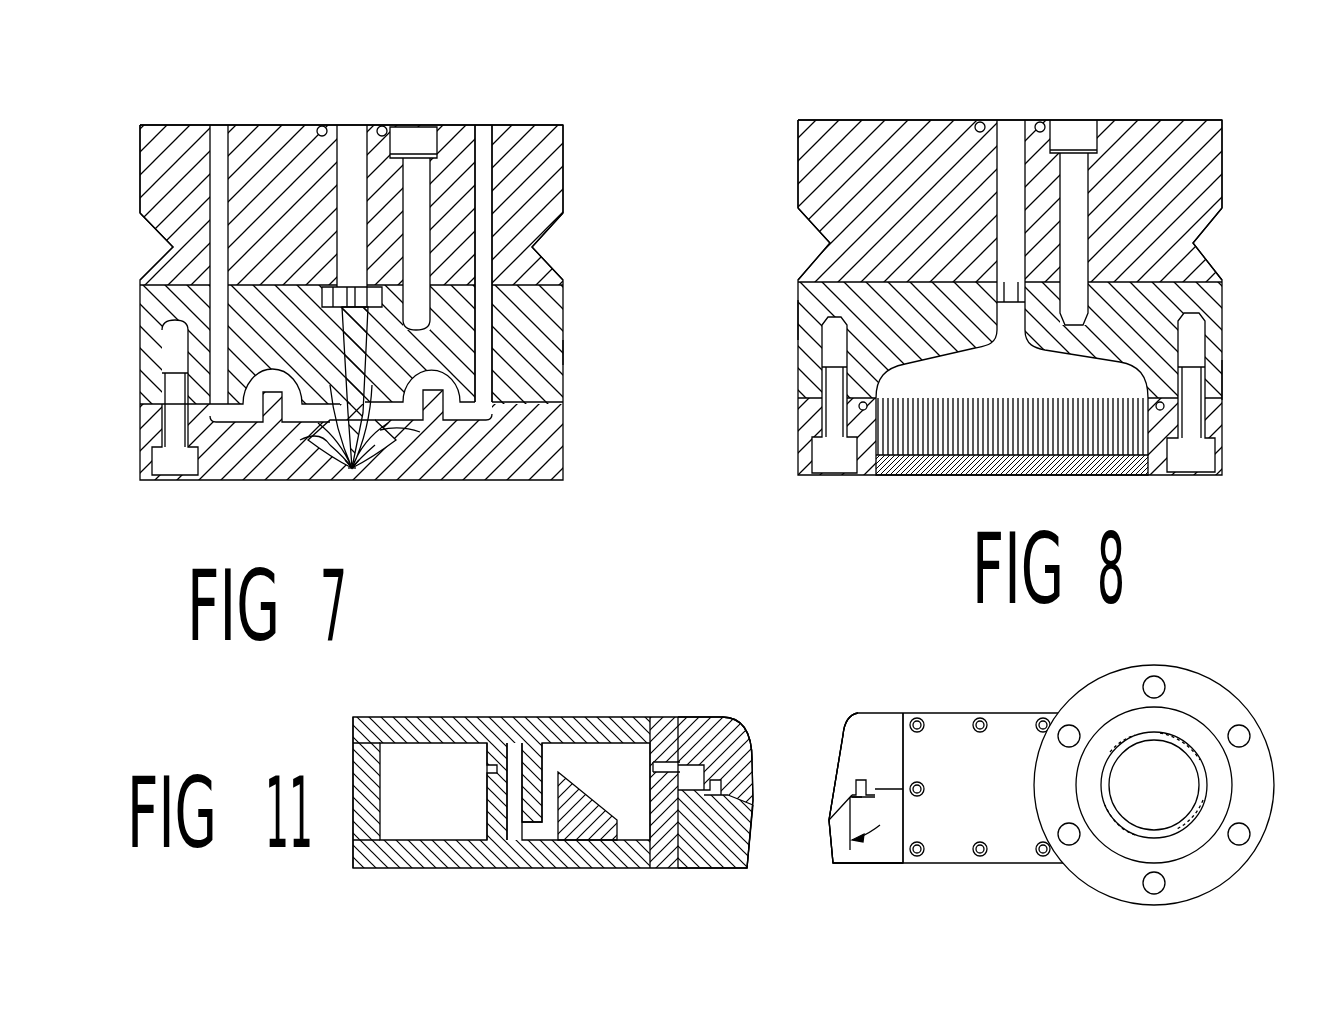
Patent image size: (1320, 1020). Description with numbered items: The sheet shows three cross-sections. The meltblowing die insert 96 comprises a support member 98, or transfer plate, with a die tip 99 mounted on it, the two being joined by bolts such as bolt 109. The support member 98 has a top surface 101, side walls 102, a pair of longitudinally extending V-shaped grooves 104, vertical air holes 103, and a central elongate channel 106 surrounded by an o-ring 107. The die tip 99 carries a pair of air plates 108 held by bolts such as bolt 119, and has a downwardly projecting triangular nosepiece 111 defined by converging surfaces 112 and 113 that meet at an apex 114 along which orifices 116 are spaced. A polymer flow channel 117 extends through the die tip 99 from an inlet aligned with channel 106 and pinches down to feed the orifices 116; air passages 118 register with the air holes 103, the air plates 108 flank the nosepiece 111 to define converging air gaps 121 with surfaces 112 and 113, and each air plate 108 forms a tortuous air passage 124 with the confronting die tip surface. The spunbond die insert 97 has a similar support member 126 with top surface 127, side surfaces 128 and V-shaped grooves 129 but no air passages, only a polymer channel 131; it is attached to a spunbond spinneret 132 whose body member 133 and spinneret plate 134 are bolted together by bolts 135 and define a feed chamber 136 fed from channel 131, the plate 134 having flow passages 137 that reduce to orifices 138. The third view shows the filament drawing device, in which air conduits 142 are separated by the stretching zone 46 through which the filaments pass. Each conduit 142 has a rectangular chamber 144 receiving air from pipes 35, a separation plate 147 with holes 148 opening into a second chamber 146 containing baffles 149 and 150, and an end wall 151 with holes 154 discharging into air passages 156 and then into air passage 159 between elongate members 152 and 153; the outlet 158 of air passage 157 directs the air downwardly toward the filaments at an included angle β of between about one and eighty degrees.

In FIG. 11, the air supply pipe 35 is at (1176, 733).
In FIG. 11, the stretching zone 46 is at (814, 868).
In FIG. 7, the meltblowing die insert 96 is at (568, 353).
In FIG. 8, the spunbond die insert 97 is at (1250, 378).
In FIG. 7, the support member 98 is at (535, 200).
In FIG. 7, the die tip 99 is at (480, 398).
In FIG. 7, the top surface 101 is at (165, 125).
In FIG. 7, the side walls 102 is at (140, 152).
In FIG. 7, the air holes 103 is at (222, 170).
In FIG. 7, the V-shaped grooves 104 is at (165, 242).
In FIG. 7, the elongate channel 106 is at (350, 140).
In FIG. 7, the o-ring 107 is at (395, 165).
In FIG. 7, the air plates 108 is at (240, 468).
In FIG. 7, the bolt 109 is at (470, 185).
In FIG. 7, the triangular nosepiece 111 is at (360, 470).
In FIG. 7, the converging surface 112 is at (305, 450).
In FIG. 7, the converging surface 113 is at (478, 420).
In FIG. 7, the apex 114 is at (355, 478).
In FIG. 7, the orifices 116 is at (352, 400).
In FIG. 7, the polymer flow channel 117 is at (340, 345).
In FIG. 7, the air passages 118 is at (180, 320).
In FIG. 7, the bolt 119 is at (175, 478).
In FIG. 7, the converging air gaps 121 is at (380, 440).
In FIG. 7, the tortuous air passage 124 is at (272, 372).
In FIG. 8, the support member 126 is at (1112, 130).
In FIG. 8, the top surface 127 is at (895, 120).
In FIG. 8, the side surfaces 128 is at (798, 172).
In FIG. 8, the V-shaped grooves 129 is at (800, 258).
In FIG. 8, the polymer channel 131 is at (1025, 195).
In FIG. 8, the spunbond spinneret 132 is at (790, 316).
In FIG. 8, the body member 133 is at (1225, 308).
In FIG. 8, the spinneret plate 134 is at (1225, 450).
In FIG. 8, the bolts 135 is at (1190, 462).
In FIG. 8, the feed chamber 136 is at (1022, 380).
In FIG. 8, the flow passages 137 is at (898, 398).
In FIG. 8, the orifices 138 is at (918, 475).
In FIG. 11, the air conduits 142 is at (592, 712).
In FIG. 11, the rectangular chamber 144 is at (415, 793).
In FIG. 11, the second chamber 146 is at (602, 777).
In FIG. 11, the separation plate 147 is at (460, 840).
In FIG. 11, the holes 148 is at (500, 740).
In FIG. 11, the baffle 149 is at (530, 850).
In FIG. 11, the baffle 150 is at (598, 840).
In FIG. 11, the end wall 151 is at (660, 755).
In FIG. 11, the elongate member 152 is at (722, 740).
In FIG. 11, the elongate member 153 is at (692, 862).
In FIG. 11, the holes 154 is at (700, 714).
In FIG. 11, the air passages 156 is at (722, 768).
In FIG. 11, the air passage 157 is at (732, 787).
In FIG. 11, the outlet 158 is at (740, 800).
In FIG. 11, the air passage 159 is at (745, 825).